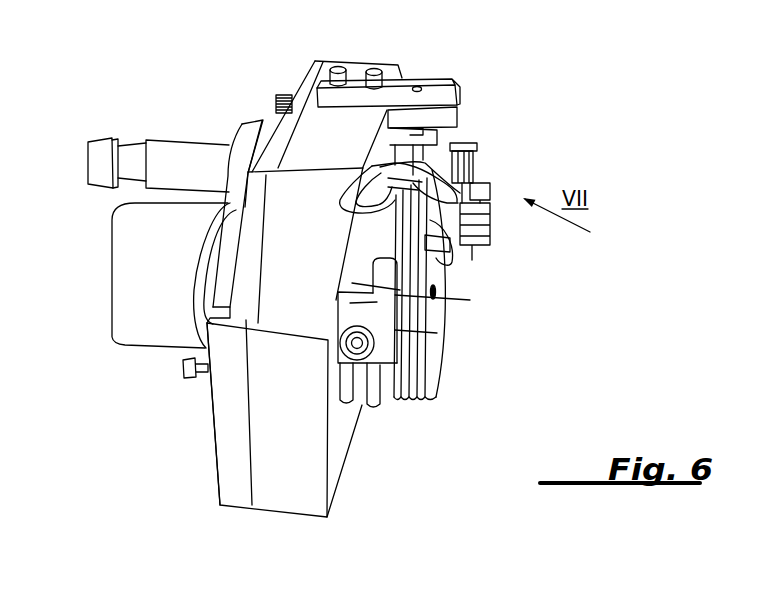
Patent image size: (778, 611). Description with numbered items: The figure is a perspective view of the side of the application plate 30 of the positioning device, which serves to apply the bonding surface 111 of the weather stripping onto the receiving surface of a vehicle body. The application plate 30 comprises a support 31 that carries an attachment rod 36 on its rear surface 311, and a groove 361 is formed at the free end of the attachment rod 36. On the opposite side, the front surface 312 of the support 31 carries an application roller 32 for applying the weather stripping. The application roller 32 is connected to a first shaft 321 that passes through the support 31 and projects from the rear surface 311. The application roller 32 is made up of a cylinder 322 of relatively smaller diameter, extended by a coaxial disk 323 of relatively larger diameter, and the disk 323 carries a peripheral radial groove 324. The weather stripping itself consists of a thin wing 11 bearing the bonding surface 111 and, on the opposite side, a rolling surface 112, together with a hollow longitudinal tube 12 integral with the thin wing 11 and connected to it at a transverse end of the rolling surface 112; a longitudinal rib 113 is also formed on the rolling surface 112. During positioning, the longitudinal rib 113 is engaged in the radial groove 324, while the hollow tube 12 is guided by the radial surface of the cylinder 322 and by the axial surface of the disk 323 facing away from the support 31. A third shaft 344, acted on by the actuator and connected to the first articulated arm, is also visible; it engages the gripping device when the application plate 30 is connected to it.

The thin wing 11 is at (420, 180).
The hollow longitudinal tube 12 is at (342, 208).
The application plate 30 is at (210, 498).
The support 31 is at (306, 460).
The application roller 32 is at (442, 311).
The attachment rod 36 is at (193, 155).
The bonding surface 111 is at (398, 161).
The rolling surface 112 is at (478, 170).
The longitudinal rib 113 is at (355, 258).
The rear surface 311 is at (205, 427).
The front surface 312 is at (365, 428).
The first shaft 321 is at (143, 315).
The cylinder 322 is at (353, 262).
The coaxial disk 323 is at (427, 258).
The peripheral radial groove 324 is at (413, 335).
The third shaft 344 is at (185, 377).
The groove 361 is at (132, 152).